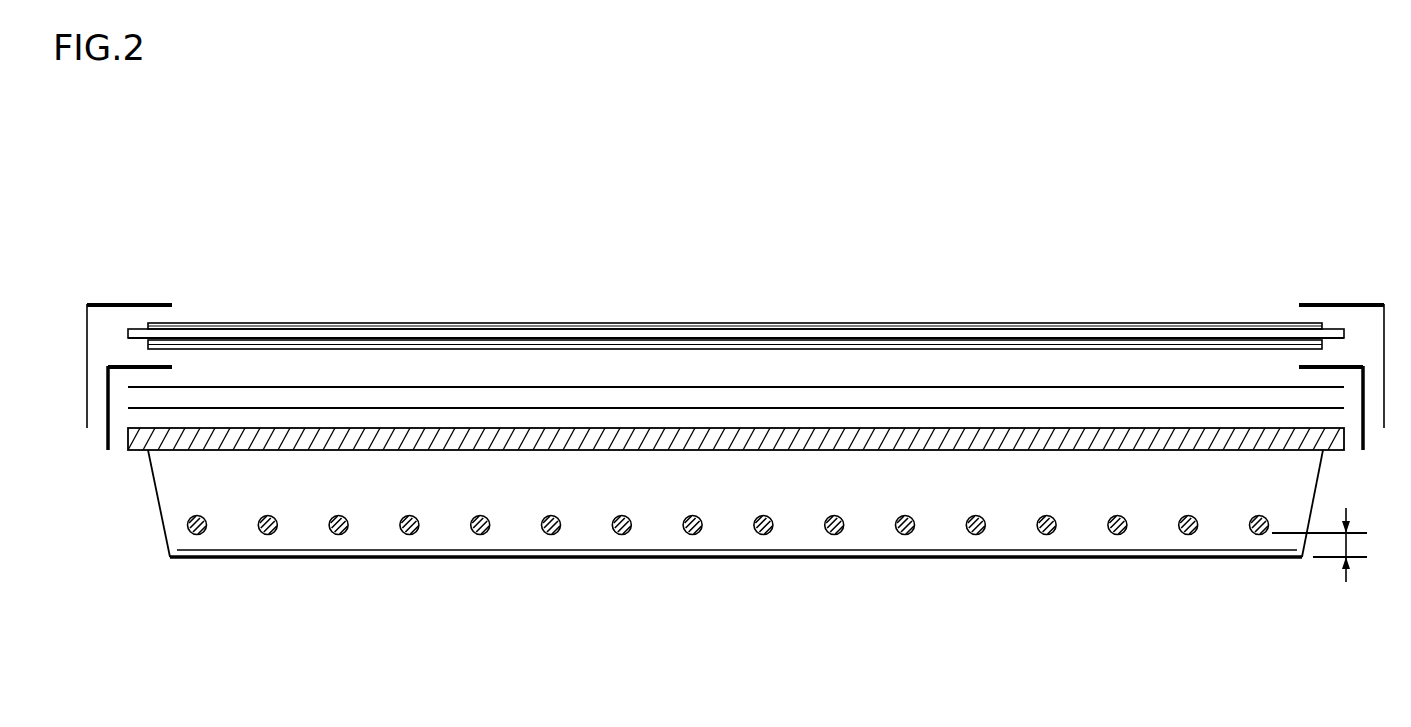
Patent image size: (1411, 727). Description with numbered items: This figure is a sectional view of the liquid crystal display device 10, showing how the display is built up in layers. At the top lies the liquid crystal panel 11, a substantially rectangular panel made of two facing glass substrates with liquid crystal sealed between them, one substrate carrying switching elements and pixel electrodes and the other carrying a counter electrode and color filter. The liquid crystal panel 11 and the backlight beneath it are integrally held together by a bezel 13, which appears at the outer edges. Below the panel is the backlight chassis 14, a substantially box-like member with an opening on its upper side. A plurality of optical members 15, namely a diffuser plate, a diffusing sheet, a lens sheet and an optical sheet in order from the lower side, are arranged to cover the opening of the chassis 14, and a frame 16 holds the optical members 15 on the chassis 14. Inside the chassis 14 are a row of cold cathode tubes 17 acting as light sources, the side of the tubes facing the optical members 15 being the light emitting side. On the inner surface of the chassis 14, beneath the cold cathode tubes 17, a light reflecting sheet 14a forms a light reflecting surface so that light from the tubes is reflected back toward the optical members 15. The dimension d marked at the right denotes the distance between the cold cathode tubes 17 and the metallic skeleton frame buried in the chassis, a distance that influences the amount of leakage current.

The liquid crystal display device 10 is at (563, 262).
The liquid crystal panel 11 is at (432, 323).
The bezel 13 is at (137, 303).
The backlight chassis 14 is at (155, 493).
The light reflecting sheet 14a is at (1075, 550).
The optical members 15 is at (715, 428).
The frame 16 is at (118, 365).
The cold cathode tubes 17 is at (409, 515).
The distance d is at (1330, 545).